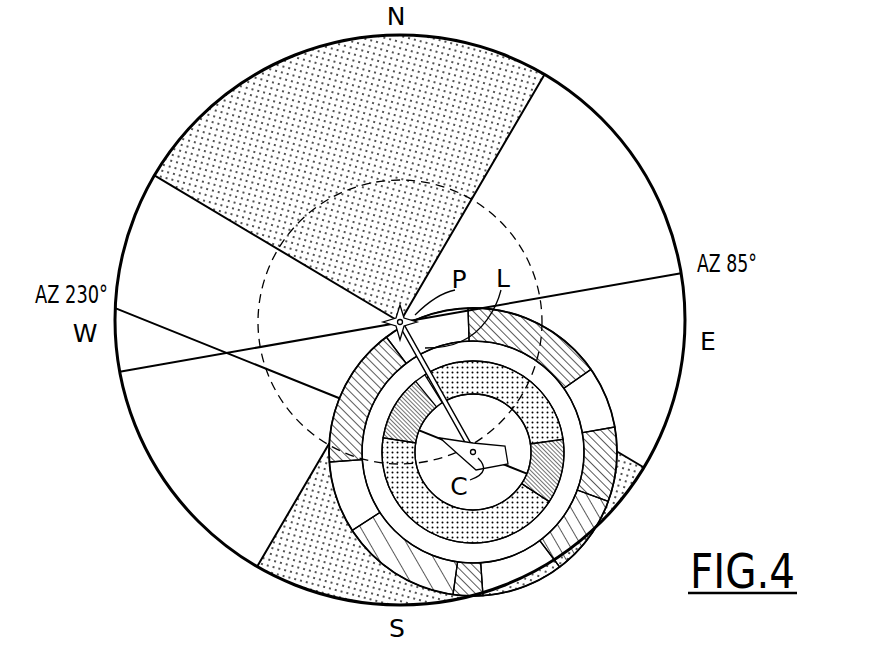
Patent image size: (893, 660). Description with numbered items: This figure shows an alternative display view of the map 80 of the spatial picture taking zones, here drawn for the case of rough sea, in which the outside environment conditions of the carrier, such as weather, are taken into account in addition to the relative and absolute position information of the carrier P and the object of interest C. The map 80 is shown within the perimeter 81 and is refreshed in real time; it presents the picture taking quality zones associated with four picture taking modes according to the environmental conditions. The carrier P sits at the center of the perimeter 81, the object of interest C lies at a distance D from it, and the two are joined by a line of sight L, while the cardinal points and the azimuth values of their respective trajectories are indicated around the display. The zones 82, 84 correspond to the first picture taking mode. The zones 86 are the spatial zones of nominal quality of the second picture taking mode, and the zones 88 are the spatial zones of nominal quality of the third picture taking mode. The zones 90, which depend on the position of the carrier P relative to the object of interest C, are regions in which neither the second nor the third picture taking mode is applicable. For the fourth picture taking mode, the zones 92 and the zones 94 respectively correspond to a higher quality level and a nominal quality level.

The map 80 is at (650, 143).
The perimeter 81 is at (596, 110).
The zone 82 is at (483, 76).
The zone 84 is at (652, 227).
The zones 86 is at (569, 362).
The zones 88 is at (349, 364).
The zones 90 is at (603, 392).
The zones 92 is at (417, 503).
The zones 94 is at (607, 519).